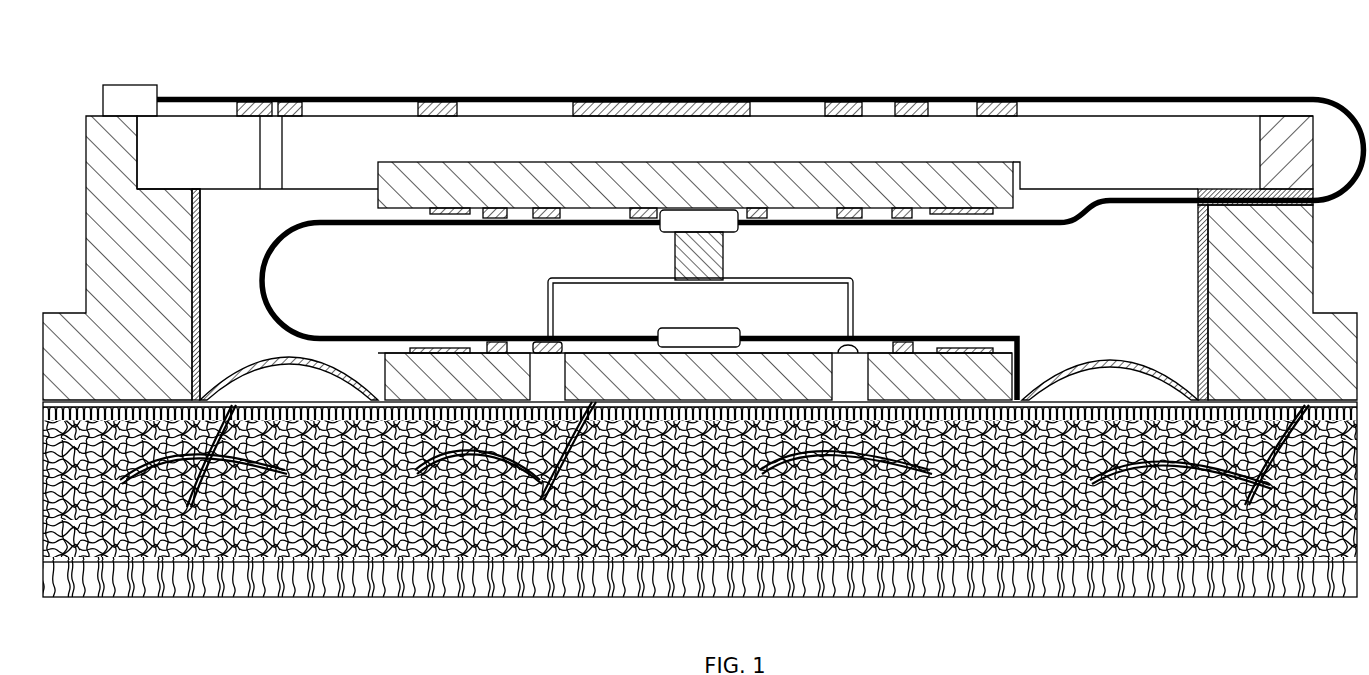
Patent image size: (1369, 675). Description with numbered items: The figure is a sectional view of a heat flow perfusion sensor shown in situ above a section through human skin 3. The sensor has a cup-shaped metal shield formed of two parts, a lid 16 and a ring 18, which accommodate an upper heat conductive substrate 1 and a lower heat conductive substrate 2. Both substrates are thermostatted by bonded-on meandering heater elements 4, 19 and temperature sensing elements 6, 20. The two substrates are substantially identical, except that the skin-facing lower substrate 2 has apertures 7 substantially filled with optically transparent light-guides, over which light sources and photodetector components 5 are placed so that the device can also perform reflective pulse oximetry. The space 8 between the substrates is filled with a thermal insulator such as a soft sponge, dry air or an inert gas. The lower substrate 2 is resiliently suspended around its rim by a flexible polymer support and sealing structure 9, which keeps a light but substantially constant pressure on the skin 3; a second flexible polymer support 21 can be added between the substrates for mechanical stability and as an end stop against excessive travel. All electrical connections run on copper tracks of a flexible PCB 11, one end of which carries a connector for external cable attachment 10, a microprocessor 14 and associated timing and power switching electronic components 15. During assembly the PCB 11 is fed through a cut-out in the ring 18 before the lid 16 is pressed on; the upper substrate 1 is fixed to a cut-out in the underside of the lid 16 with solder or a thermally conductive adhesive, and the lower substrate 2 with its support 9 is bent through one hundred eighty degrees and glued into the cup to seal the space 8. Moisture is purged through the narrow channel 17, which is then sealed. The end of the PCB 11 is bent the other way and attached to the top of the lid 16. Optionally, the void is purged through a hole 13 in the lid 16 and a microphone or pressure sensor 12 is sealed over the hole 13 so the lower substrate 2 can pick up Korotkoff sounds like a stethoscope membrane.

The upper heat conductive substrate 1 is at (397, 200).
The lower heat conductive substrate 2 is at (405, 382).
The human skin 3 is at (460, 592).
The meandering heater element 4 is at (442, 345).
The photodetector component 5 is at (542, 344).
The temperature sensing element 6 is at (690, 330).
The aperture 7 is at (858, 378).
The space between the substrates 8 is at (945, 312).
The flexible polymer support and sealing structure 9 is at (1122, 366).
The connector for external cable attachment 10 is at (131, 93).
The flexible PCB 11 is at (213, 96).
The microphone or pressure sensor 12 is at (282, 102).
The hole 13 is at (282, 150).
The microprocessor 14 is at (652, 100).
The timing and power switching electronic components 15 is at (910, 100).
The lid 16 is at (1150, 155).
The narrow channel 17 is at (1245, 195).
The ring 18 is at (1288, 135).
The meandering heater element 19 is at (965, 215).
The temperature sensing element 20 is at (735, 228).
The second flexible polymer support 21 is at (674, 258).